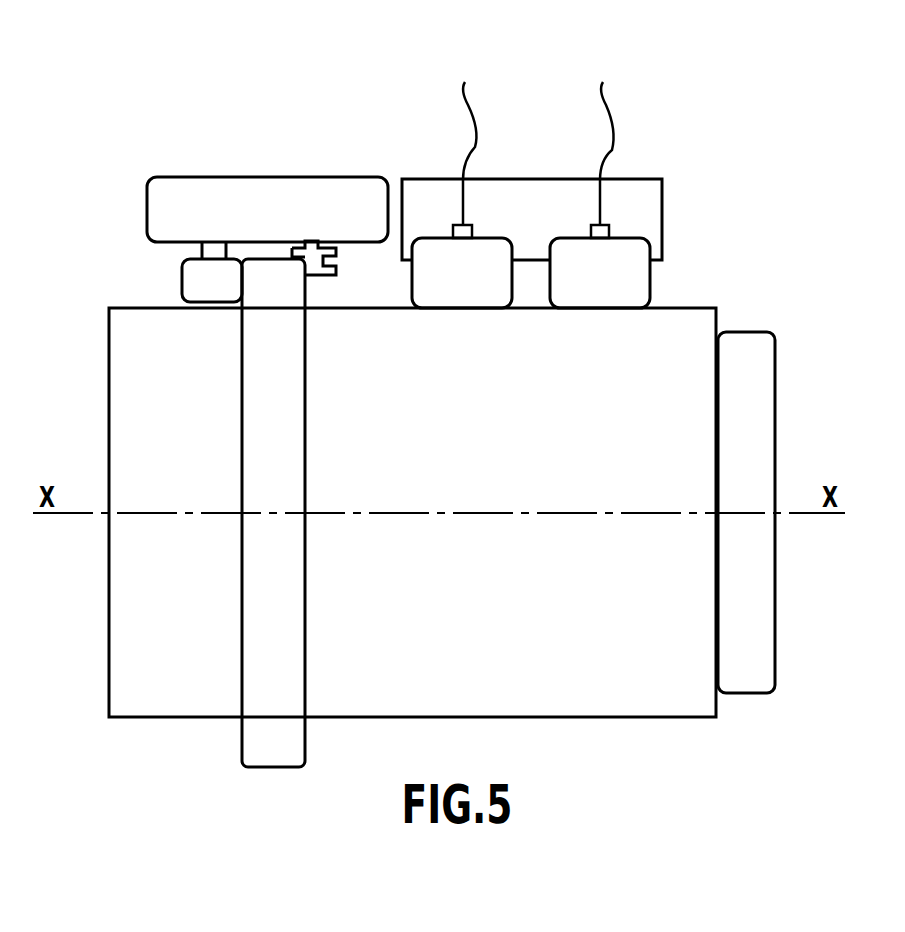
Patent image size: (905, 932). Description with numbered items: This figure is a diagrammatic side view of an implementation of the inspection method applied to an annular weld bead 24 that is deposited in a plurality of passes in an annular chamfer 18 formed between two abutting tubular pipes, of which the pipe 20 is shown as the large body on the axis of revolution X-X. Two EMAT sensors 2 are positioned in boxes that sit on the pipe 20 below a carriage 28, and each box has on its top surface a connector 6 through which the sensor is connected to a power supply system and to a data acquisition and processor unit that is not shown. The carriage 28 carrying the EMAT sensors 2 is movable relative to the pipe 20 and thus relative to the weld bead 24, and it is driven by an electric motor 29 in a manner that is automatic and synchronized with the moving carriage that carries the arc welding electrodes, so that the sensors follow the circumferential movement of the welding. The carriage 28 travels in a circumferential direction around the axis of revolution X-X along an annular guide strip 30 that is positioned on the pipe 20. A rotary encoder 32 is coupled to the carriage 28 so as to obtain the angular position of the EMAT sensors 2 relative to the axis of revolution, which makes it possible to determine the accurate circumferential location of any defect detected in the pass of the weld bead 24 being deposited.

The EMAT sensor 2 is at (471, 288).
The connector 6 is at (454, 227).
The chamfer 18 is at (718, 317).
The tubular pipe 20 is at (636, 649).
The annular weld bead 24 is at (734, 388).
The carriage 28 is at (517, 221).
The electric motor 29 is at (260, 220).
The annular guide strip 30 is at (260, 388).
The rotary encoder 32 is at (199, 293).